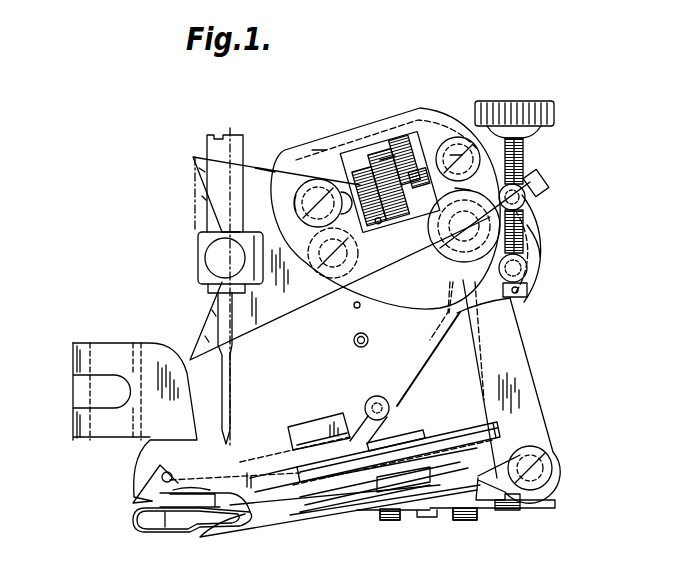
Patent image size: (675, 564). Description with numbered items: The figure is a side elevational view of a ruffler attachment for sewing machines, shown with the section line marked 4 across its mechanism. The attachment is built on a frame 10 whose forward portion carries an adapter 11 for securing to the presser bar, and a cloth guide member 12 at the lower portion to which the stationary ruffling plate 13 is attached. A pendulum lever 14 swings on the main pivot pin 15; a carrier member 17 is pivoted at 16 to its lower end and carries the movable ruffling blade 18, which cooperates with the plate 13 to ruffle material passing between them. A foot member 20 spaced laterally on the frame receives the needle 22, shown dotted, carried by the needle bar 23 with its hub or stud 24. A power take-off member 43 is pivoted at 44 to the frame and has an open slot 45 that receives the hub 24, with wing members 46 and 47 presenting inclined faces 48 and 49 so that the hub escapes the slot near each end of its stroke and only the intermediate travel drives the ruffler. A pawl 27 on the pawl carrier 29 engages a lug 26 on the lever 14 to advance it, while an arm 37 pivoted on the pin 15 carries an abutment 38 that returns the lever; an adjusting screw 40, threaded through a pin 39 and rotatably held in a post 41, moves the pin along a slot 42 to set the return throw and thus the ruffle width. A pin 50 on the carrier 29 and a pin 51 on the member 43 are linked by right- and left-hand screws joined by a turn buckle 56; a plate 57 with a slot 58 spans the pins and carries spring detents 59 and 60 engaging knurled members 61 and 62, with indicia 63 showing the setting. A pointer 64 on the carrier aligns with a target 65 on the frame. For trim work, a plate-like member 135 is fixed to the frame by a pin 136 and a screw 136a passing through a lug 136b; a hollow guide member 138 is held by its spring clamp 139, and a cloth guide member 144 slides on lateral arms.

The section line 4- 4 is at (380, 68).
The frame 10 is at (292, 392).
The adapter 11 is at (59, 262).
The cloth guide member 12 is at (490, 510).
The stationary ruffling plate 13 is at (355, 518).
The pendulum lever 14 is at (538, 413).
The pivot pin 15 is at (483, 319).
The pivot 16 is at (544, 474).
The carrier member 17 is at (482, 472).
The movable ruffling blade 18 is at (303, 518).
The foot member 20 is at (137, 524).
The needle 22 is at (222, 409).
The needle bar 23 is at (207, 146).
The hub or stud 24 is at (198, 264).
The lug 26 is at (525, 161).
The pawl 27 is at (456, 148).
The pawl carrier 29 is at (547, 254).
The arm 37 is at (530, 182).
The lug or abutment 38 is at (527, 183).
The pin 39 is at (548, 189).
The adjusting screw 40 is at (513, 133).
The post 41 is at (527, 274).
The slot 42 is at (532, 239).
The power take-off member 43 is at (268, 164).
The pivot 44 is at (353, 308).
The open slot 45 is at (229, 232).
The wing member 46 is at (208, 339).
The wing member 47 is at (202, 172).
The inclined face 48 is at (214, 313).
The inclined face 49 is at (203, 198).
The pin 50 is at (462, 188).
The pin 51 is at (314, 185).
The turn buckle 56 is at (382, 160).
The plate 57 is at (318, 150).
The slot 58 is at (296, 203).
The spring detent 59 is at (412, 150).
The spring detent 60 is at (338, 262).
The knurled member 61 is at (416, 258).
The knurled member 62 is at (356, 175).
The indicia 63 is at (302, 186).
The pointer 64 is at (418, 363).
The target 65 is at (354, 340).
The plate-like member 135 is at (440, 421).
The pin 136 is at (364, 404).
The screw 136a is at (185, 486).
The lug 136b is at (173, 513).
The hollow guide member 138 is at (440, 439).
The spring clamp 139 is at (405, 480).
The cloth guide member 144 is at (302, 424).